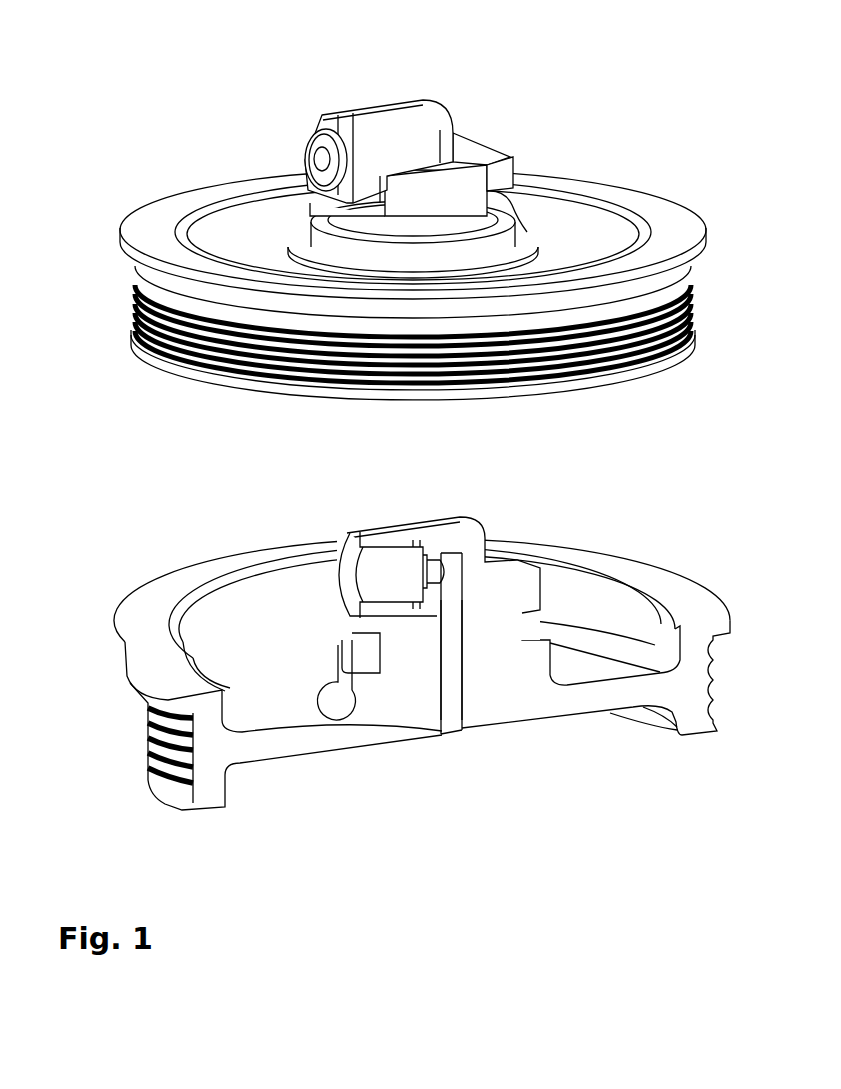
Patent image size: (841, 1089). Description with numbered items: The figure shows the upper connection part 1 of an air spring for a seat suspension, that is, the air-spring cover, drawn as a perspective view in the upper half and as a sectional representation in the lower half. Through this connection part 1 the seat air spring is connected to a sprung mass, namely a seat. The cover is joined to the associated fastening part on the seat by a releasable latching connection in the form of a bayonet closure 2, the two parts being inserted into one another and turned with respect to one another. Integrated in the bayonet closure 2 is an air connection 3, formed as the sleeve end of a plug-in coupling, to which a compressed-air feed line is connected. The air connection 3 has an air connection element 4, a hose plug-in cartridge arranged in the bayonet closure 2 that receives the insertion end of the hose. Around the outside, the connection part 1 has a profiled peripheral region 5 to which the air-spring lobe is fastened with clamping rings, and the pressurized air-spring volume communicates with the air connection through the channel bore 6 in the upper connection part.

The upper connection part 1 is at (584, 93).
The bayonet closure 2 is at (503, 170).
The air connection 3 is at (267, 128).
The air connection element 4 is at (372, 577).
The profiled peripheral region 5 is at (110, 291).
The channel bore 6 is at (446, 661).